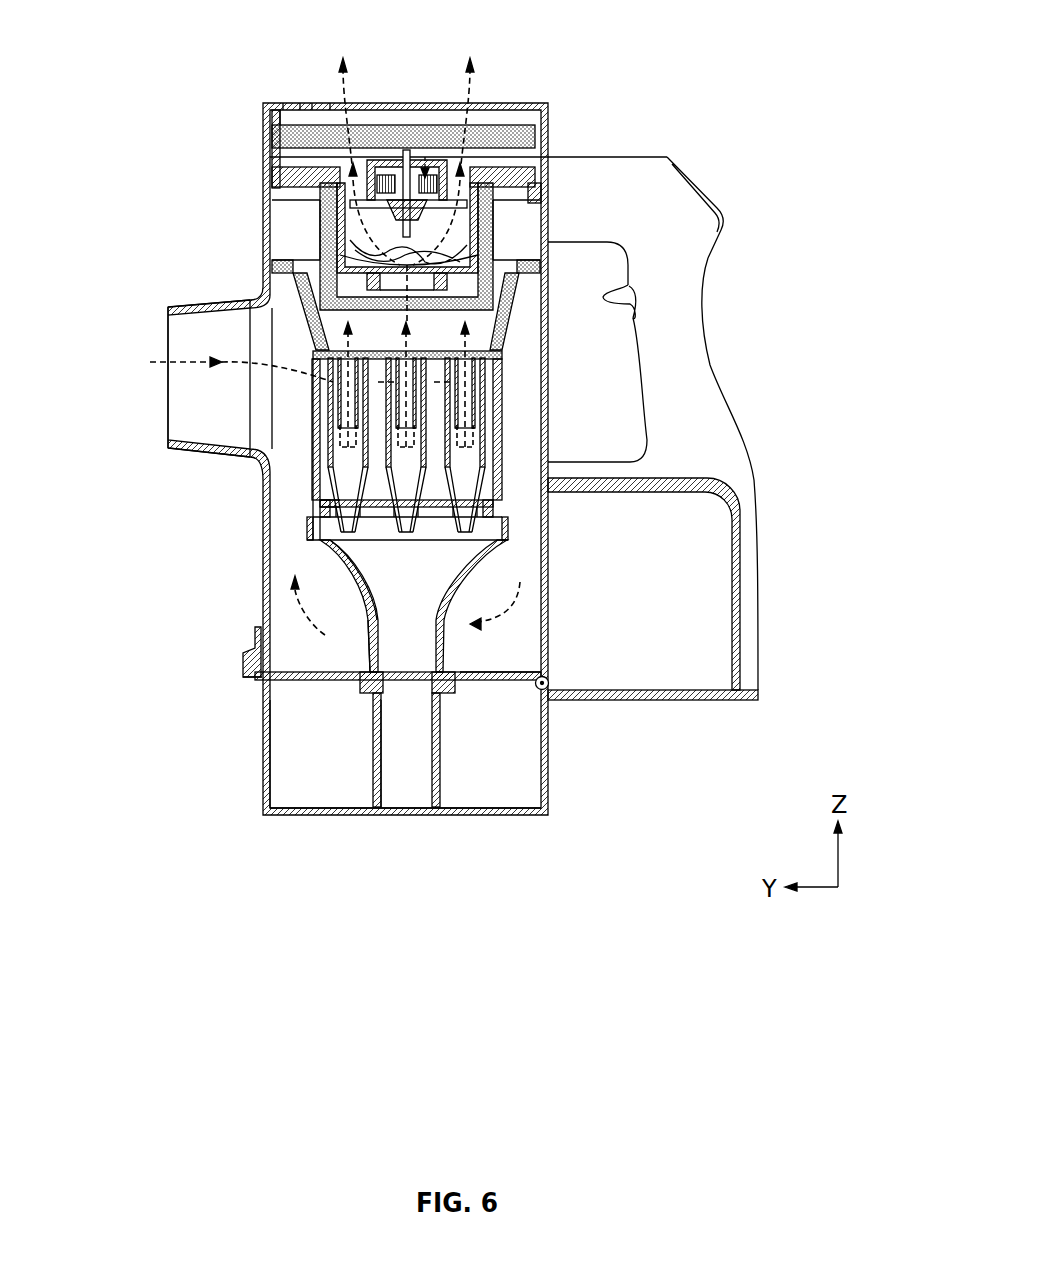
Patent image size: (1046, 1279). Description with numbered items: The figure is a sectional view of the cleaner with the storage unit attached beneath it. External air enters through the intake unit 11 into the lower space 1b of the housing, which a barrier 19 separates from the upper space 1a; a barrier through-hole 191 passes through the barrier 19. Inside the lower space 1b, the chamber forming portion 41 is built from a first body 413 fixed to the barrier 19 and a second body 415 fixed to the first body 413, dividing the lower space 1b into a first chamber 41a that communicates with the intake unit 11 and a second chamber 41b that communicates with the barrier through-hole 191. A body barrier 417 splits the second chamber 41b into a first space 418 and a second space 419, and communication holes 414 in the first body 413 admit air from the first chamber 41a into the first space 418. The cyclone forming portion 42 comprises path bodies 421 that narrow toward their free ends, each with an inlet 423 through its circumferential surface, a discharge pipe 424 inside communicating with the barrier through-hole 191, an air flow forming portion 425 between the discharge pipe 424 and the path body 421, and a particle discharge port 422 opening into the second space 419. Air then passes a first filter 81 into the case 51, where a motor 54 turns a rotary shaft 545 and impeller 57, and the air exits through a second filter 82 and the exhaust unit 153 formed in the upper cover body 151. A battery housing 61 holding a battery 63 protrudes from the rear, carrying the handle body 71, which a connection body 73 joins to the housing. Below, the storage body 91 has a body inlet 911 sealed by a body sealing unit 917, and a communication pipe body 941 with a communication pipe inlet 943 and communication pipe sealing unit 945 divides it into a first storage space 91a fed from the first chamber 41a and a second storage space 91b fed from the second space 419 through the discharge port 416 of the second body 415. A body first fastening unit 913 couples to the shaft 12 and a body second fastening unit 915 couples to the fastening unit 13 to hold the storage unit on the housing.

The intake unit 11 is at (220, 335).
The upper cover body 151 is at (283, 103).
The exhaust unit 153 is at (315, 103).
The second filter 82 is at (290, 133).
The case 51 is at (290, 177).
The motor 54 is at (425, 165).
The rotary shaft 545 is at (403, 225).
The impeller 57 is at (490, 243).
The first filter 81 is at (322, 218).
The upper space 1a is at (295, 243).
The connection body 73 is at (638, 173).
The handle body 71 is at (677, 300).
The barrier 19 is at (513, 295).
The barrier through-hole 191 is at (505, 350).
The first body 413 is at (503, 397).
The communication holes 414 is at (503, 412).
The body barrier 417 is at (480, 470).
The second body 415 is at (507, 512).
The chamber forming portion 41 is at (840, 350).
The cyclone forming portion 42 is at (90, 385).
The inlet 423 is at (338, 383).
The air flow forming portion 425 is at (341, 403).
The discharge pipe 424 is at (336, 422).
The path body 421 is at (331, 445).
The particle discharge port 422 is at (320, 470).
The first chamber 41a is at (312, 515).
The second chamber 41b is at (160, 588).
The first space 418 is at (348, 543).
The second space 419 is at (368, 605).
The lower space 1b is at (88, 570).
The body inlet 911 is at (400, 670).
The body sealing unit 917 is at (527, 680).
The shaft 12 is at (540, 692).
The body first fastening unit 913 is at (548, 686).
The body second fastening unit 915 is at (250, 647).
The fastening unit 13 is at (258, 678).
The communication pipe body 941 is at (370, 693).
The communication pipe inlet 943 is at (360, 680).
The communication pipe sealing unit 945 is at (377, 727).
The discharge port 416 is at (412, 683).
The storage body 91 is at (282, 810).
The first storage space 91a is at (345, 760).
The second storage space 91b is at (398, 762).
The battery housing 61 is at (737, 563).
The battery 63 is at (670, 657).